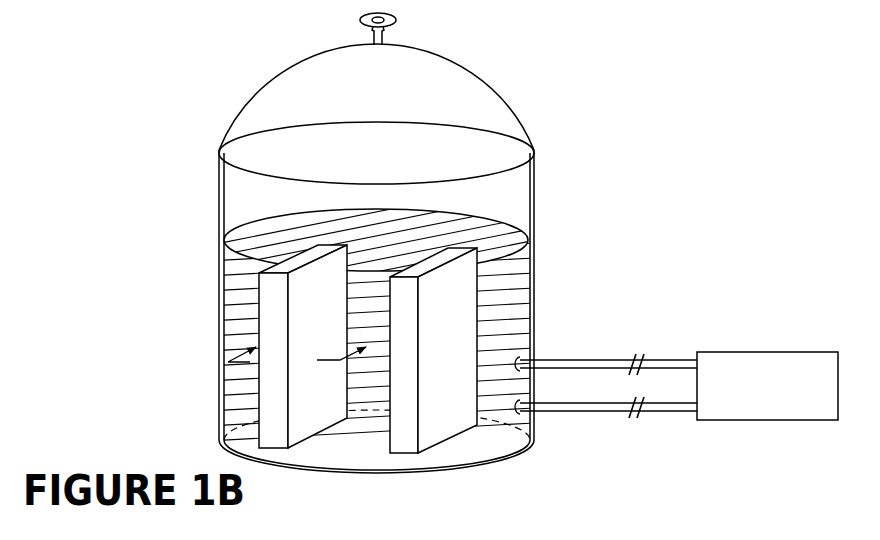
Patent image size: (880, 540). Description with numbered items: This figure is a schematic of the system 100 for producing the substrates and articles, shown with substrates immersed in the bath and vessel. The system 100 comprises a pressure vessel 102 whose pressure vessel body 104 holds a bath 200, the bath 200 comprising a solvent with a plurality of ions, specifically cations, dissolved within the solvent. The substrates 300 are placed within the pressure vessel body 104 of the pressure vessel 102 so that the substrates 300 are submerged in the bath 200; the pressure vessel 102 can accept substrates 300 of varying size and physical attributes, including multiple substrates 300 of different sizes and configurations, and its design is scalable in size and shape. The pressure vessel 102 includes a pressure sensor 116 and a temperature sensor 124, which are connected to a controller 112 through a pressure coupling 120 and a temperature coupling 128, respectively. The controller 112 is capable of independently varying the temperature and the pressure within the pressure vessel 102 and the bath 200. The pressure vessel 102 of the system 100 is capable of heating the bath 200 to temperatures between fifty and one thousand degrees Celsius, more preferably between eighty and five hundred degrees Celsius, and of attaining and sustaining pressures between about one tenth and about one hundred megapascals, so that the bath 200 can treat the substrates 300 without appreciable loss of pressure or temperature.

The system 100 is at (583, 122).
The pressure vessel 102 is at (544, 220).
The pressure vessel body 104 is at (536, 247).
The controller 112 is at (752, 412).
The pressure sensor 116 is at (520, 360).
The pressure coupling 120 is at (607, 359).
The temperature sensor 124 is at (521, 418).
The temperature coupling 128 is at (615, 410).
The bath 200 is at (357, 256).
The substrates 300 is at (257, 402).